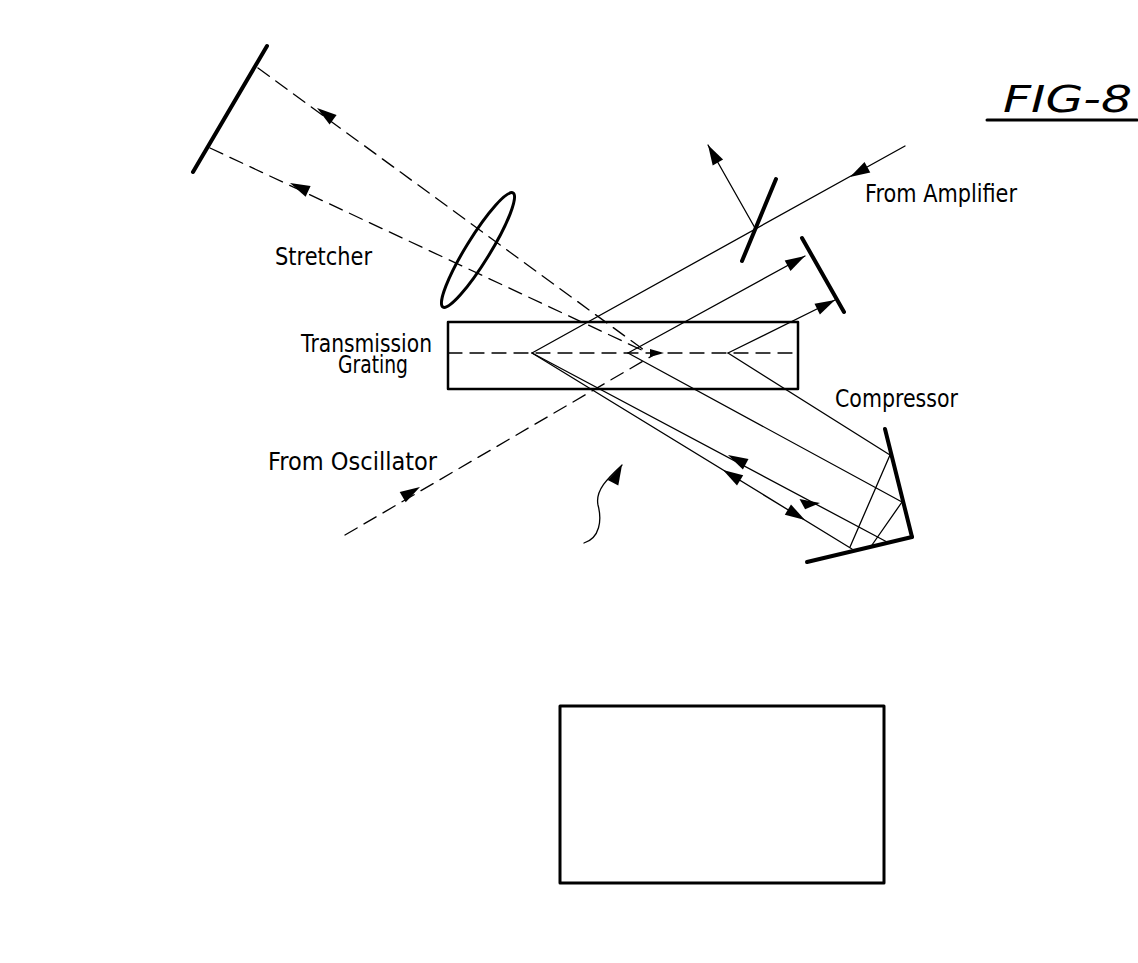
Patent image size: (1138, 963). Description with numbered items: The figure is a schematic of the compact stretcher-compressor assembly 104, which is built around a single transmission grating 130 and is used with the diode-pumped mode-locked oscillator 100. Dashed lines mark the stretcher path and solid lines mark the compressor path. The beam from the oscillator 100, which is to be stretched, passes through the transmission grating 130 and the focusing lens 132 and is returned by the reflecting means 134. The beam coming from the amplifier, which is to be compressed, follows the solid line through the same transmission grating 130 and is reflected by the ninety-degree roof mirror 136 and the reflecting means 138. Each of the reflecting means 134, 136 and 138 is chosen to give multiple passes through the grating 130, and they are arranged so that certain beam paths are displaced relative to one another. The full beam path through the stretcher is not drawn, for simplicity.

The mode-locked oscillator 100 is at (558, 775).
The stretcher-compressor assembly 104 is at (584, 543).
The transmission grating 130 is at (450, 358).
The focusing lens 132 is at (514, 195).
The reflecting means 134 is at (266, 60).
The 90° roof mirror 136 is at (906, 497).
The reflecting means 138 is at (822, 265).